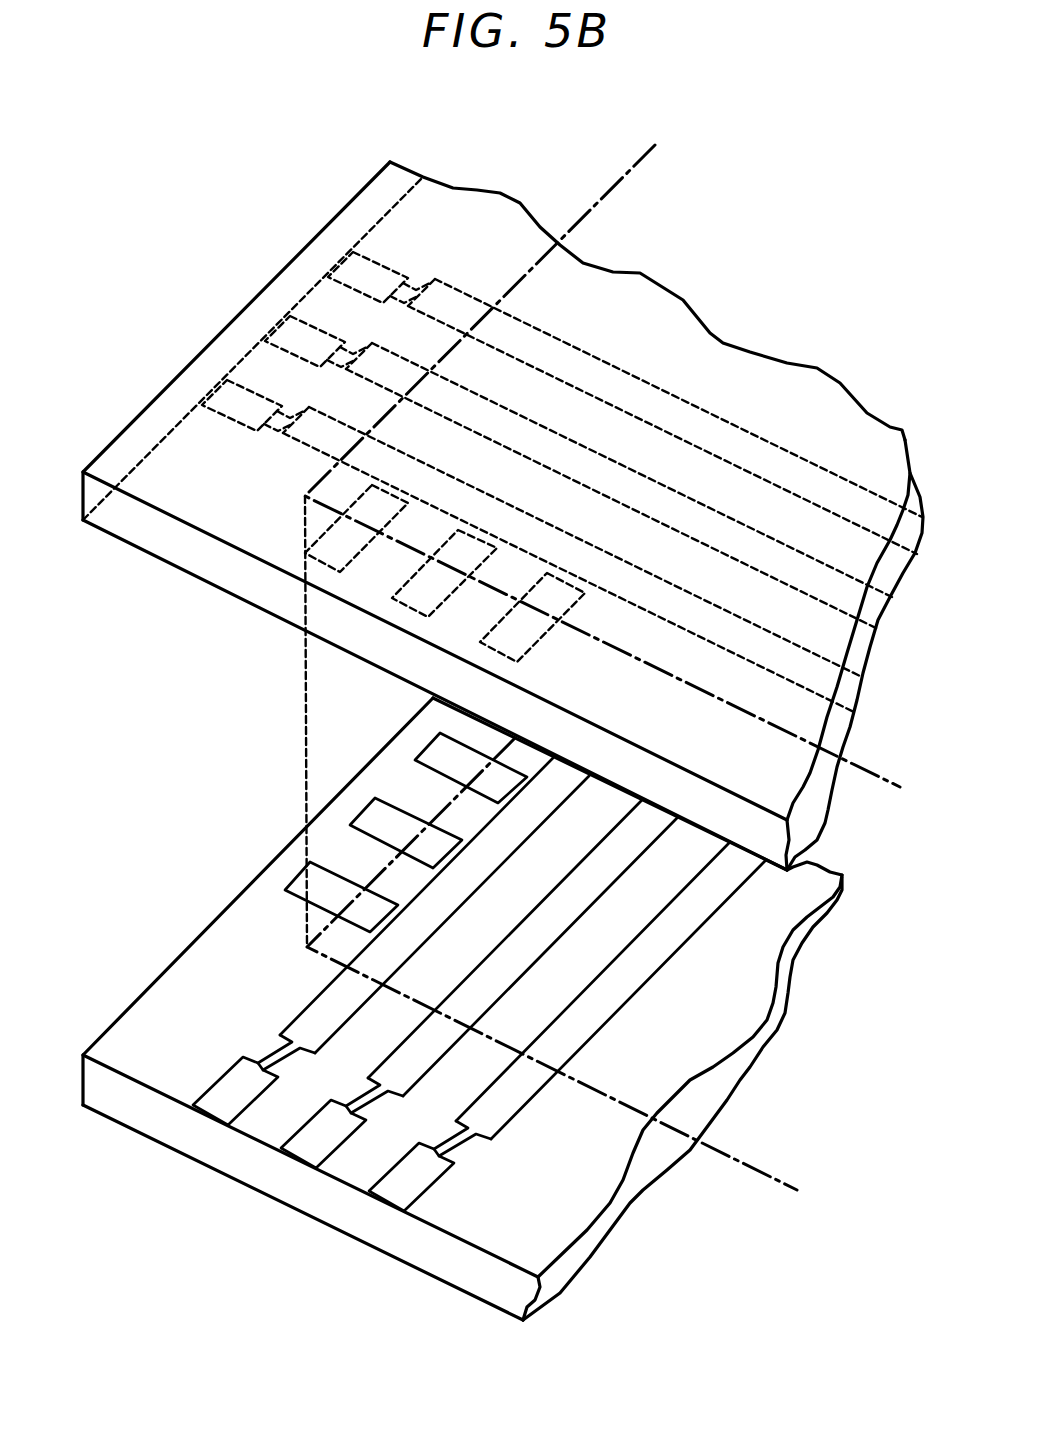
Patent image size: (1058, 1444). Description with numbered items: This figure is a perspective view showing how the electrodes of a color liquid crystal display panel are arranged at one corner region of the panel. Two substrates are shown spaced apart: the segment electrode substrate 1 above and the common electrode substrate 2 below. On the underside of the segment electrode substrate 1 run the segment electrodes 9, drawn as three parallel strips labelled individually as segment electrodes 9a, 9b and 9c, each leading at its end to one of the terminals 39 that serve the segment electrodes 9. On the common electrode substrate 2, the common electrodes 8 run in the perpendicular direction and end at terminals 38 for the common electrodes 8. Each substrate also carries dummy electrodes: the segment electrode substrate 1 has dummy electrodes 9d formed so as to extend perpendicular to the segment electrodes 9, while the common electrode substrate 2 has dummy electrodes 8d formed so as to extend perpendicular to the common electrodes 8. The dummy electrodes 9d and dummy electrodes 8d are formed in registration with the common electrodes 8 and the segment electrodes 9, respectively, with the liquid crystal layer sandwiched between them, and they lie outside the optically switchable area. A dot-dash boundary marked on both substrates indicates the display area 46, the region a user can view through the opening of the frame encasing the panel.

The segment electrode substrate 1 is at (463, 210).
The common electrode substrate 2 is at (163, 985).
The common electrodes 8 is at (322, 1007).
The dummy electrodes 8d is at (432, 752).
The segment electrodes 9 is at (602, 427).
The segment electrode 9a is at (432, 480).
The segment electrode 9b is at (538, 443).
The segment electrode 9c is at (623, 382).
The dummy electrodes 9d is at (502, 642).
The terminals 38 is at (397, 1192).
The terminals 39 is at (350, 267).
The display area 46 is at (707, 687).